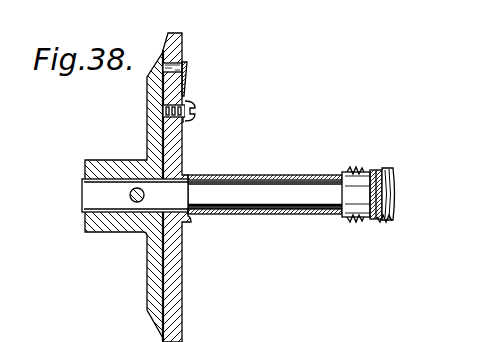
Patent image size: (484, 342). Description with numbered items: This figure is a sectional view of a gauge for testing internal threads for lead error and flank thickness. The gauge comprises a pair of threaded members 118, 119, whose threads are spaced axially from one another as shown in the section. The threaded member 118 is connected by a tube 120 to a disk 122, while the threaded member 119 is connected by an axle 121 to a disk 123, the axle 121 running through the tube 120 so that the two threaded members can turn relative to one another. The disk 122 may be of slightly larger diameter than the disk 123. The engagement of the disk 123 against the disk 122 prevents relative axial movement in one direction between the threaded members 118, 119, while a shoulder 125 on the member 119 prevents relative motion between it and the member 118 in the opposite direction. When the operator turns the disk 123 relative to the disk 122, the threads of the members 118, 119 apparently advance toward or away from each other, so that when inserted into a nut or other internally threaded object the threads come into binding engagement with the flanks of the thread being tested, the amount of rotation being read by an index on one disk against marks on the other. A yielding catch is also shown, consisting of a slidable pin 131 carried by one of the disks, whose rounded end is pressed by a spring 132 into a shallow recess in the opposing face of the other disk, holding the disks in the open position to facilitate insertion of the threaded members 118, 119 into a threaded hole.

The threaded member 118 is at (352, 170).
The threaded member 119 is at (388, 168).
The tube 120 is at (272, 176).
The axle 121 is at (287, 192).
The disk 122 is at (177, 262).
The disk 123 is at (160, 265).
The shoulder 125 is at (374, 221).
The slidable pin 131 is at (181, 63).
The spring 132 is at (186, 76).